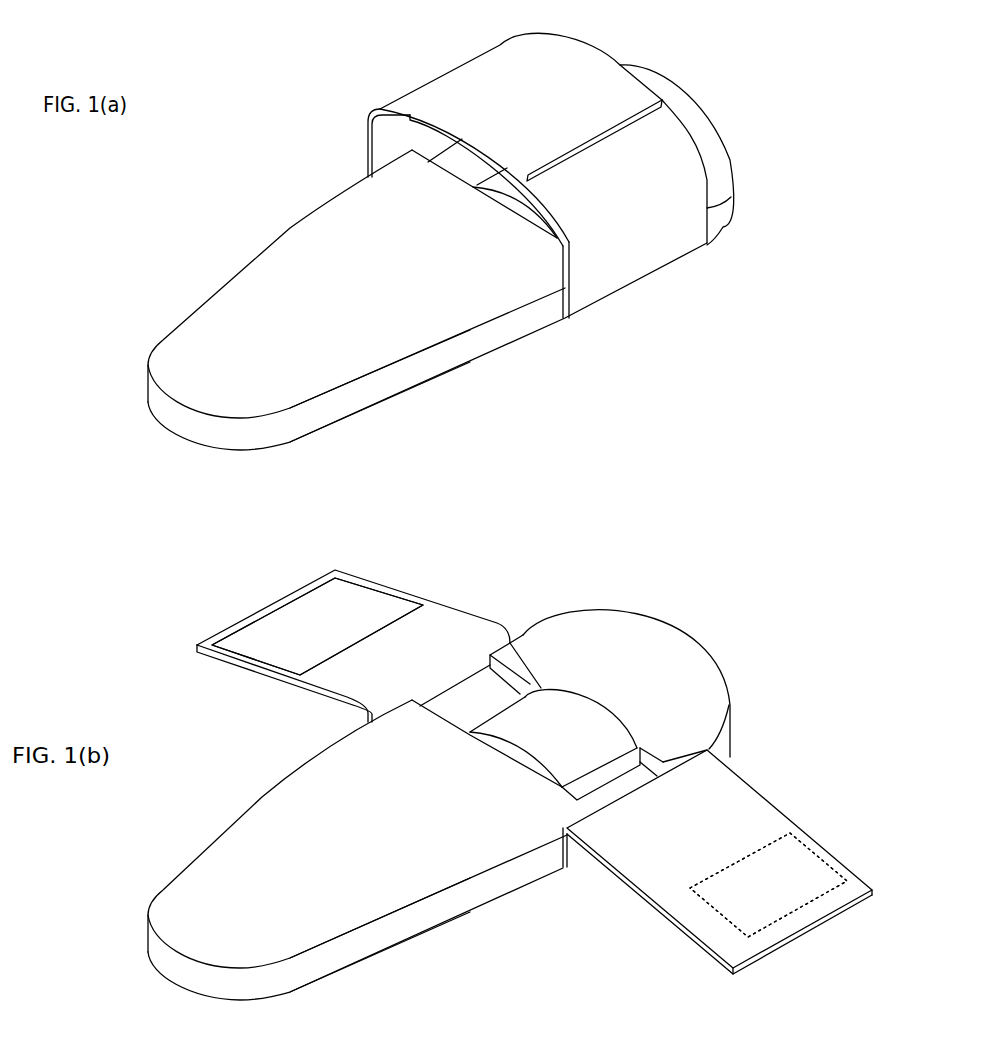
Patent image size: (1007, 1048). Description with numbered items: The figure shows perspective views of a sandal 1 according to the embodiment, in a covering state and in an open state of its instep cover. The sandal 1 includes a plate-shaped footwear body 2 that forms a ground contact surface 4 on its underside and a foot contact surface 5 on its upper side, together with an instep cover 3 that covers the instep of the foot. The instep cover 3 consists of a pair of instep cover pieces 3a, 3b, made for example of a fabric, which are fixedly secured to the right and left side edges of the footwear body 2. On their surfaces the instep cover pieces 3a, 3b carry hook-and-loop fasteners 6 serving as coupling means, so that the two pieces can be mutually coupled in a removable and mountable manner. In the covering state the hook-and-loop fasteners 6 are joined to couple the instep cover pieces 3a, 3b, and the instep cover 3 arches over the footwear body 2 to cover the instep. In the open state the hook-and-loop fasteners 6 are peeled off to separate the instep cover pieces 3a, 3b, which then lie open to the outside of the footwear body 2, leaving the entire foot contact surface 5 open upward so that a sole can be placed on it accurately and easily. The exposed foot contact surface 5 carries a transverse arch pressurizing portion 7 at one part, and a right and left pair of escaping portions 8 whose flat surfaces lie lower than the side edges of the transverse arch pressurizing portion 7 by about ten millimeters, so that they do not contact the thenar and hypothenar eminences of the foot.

In FIG. 1A, the sandal 1 is at (732, 105).
In FIG. 1B, the sandal 1 is at (730, 651).
In FIG. 1A, the footwear body 2 is at (260, 238).
In FIG. 1B, the footwear body 2 is at (248, 768).
In FIG. 1A, the instep cover 3 is at (512, 106).
In FIG. 1B, the instep cover 3 is at (223, 663).
In FIG. 1A, the instep cover piece 3a is at (364, 123).
In FIG. 1B, the instep cover piece 3a is at (448, 582).
In FIG. 1A, the instep cover piece 3b is at (692, 265).
In FIG. 1B, the instep cover piece 3b is at (767, 890).
In FIG. 1A, the ground contact surface 4 is at (450, 405).
In FIG. 1B, the ground contact surface 4 is at (450, 953).
In FIG. 1A, the foot contact surface 5 is at (453, 292).
In FIG. 1B, the foot contact surface 5 is at (450, 837).
In FIG. 1B, the hook-and-loop fastener 6 is at (258, 611).
In FIG. 1B, the transverse arch pressurizing portion 7 is at (580, 722).
In FIG. 1B, the escaping portion 8 is at (491, 700).